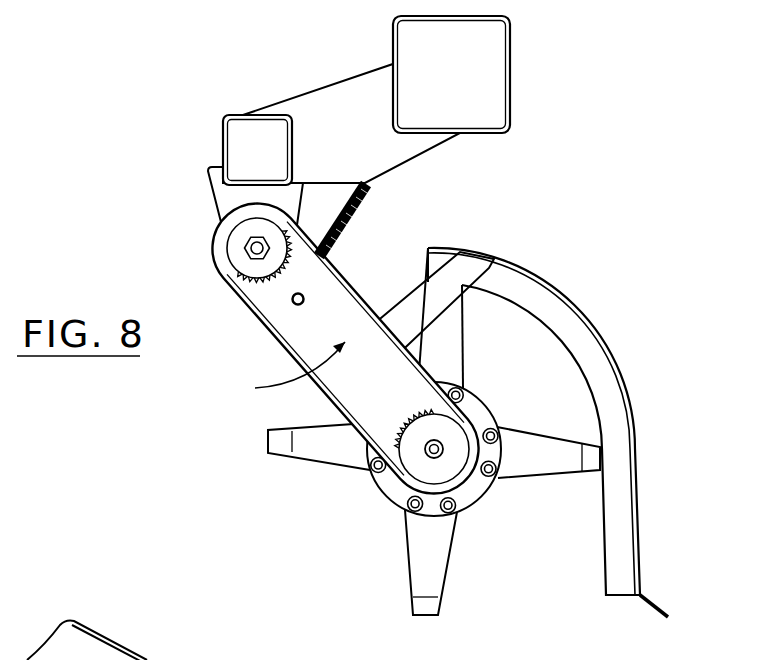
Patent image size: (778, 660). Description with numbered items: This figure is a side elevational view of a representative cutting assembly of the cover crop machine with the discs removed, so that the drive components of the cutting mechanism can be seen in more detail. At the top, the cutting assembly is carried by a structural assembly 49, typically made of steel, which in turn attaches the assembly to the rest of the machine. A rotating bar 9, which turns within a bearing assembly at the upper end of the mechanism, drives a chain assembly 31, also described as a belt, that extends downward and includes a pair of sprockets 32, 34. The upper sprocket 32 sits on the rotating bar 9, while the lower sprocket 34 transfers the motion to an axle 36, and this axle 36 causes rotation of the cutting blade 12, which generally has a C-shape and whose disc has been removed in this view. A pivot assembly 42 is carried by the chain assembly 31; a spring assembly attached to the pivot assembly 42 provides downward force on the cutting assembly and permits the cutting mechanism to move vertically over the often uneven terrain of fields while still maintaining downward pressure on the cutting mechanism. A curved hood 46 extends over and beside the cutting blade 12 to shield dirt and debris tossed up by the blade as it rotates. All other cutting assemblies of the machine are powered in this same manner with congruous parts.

The rotating bar 9 is at (255, 247).
The cutting blade 12 is at (423, 572).
The chain assembly 31 is at (280, 334).
The sprocket 32 is at (255, 273).
The sprocket 34 is at (433, 468).
The axle 36 is at (352, 218).
The pivot assembly 42 is at (283, 372).
The hood 46 is at (598, 330).
The structural assembly 49 is at (343, 97).